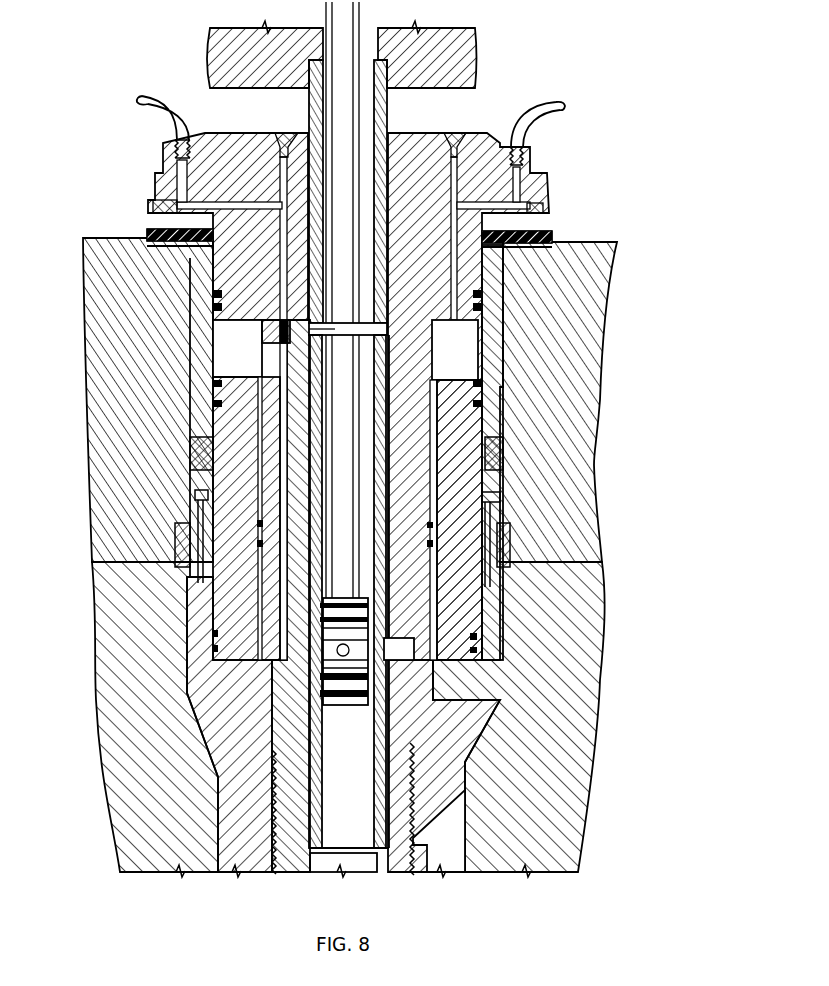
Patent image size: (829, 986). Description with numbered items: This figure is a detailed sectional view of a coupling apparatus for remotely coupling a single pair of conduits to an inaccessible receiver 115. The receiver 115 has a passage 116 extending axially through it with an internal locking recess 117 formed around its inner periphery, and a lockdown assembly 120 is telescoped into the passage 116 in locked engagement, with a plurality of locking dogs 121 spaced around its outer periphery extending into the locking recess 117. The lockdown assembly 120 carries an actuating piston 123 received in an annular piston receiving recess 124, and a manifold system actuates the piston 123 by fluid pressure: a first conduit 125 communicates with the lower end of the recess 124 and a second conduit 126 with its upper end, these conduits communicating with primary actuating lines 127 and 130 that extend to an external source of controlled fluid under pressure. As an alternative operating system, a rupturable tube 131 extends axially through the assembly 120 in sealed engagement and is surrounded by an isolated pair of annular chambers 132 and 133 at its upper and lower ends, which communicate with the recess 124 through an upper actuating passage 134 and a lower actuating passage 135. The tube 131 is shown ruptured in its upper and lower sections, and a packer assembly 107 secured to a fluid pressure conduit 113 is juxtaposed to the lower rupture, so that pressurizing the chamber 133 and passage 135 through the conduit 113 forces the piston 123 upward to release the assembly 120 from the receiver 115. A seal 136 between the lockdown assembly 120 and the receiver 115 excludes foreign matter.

The packer assembly 107 is at (338, 700).
The fluid pressure conduit 113 is at (358, 42).
The receiver 115 is at (585, 248).
The passage 116 is at (465, 858).
The internal locking recess 117 is at (505, 535).
The lockdown assembly 120 is at (428, 142).
The locking dogs 121 is at (175, 551).
The actuating piston 123 is at (237, 395).
The annular piston receiving recess 124 is at (473, 378).
The first conduit 125 is at (170, 219).
The second conduit 126 is at (440, 320).
The primary actuating line 127 is at (148, 100).
The primary actuating line 130 is at (531, 112).
The rupturable tube 131 is at (388, 100).
The upper annular chamber 132 is at (380, 347).
The lower annular chamber 133 is at (382, 561).
The upper actuating passage 134 is at (275, 333).
The lower actuating passage 135 is at (413, 661).
The seal 136 is at (548, 232).